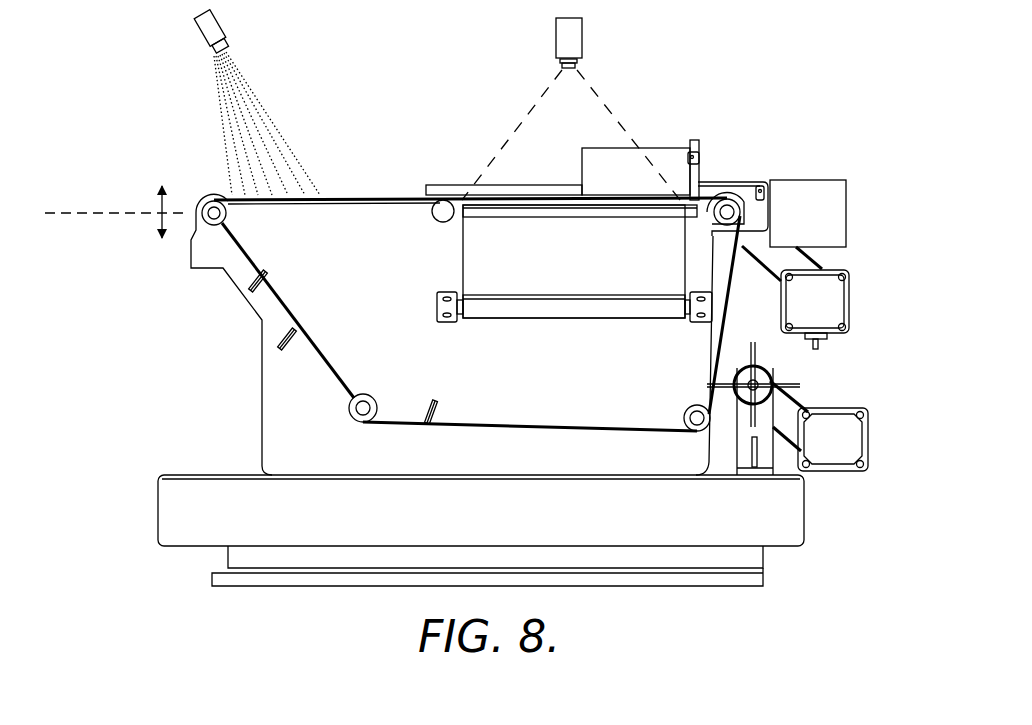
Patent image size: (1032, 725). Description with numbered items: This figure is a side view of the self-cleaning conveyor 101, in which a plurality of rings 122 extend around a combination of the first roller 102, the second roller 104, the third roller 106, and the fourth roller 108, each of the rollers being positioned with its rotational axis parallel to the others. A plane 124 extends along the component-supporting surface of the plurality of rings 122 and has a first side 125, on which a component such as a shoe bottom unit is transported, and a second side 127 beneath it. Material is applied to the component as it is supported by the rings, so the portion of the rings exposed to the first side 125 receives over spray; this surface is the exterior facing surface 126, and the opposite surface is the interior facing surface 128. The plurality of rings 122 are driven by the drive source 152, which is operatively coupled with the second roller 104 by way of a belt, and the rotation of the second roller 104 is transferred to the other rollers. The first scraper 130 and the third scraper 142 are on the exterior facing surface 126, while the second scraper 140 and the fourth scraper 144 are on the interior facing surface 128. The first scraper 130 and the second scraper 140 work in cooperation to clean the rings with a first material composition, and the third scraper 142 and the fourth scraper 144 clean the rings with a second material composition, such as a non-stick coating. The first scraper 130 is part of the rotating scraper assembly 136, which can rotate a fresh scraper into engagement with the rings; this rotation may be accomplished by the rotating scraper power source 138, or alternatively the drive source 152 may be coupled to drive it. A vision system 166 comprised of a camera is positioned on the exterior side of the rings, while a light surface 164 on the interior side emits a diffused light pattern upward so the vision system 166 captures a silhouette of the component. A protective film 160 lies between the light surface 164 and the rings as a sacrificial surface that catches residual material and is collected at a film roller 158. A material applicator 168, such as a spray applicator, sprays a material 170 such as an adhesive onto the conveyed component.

The self-cleaning conveyor 101 is at (102, 57).
The first roller 102 is at (222, 217).
The second roller 104 is at (752, 211).
The third roller 106 is at (688, 435).
The fourth roller 108 is at (353, 420).
The plurality of rings 122 is at (552, 434).
The plane 124 is at (60, 210).
The first side 125 is at (160, 199).
The exterior facing surface 126 is at (383, 194).
The second side 127 is at (160, 230).
The interior facing surface 128 is at (360, 207).
The first scraper 130 is at (709, 378).
The rotating scraper assembly 136 is at (773, 372).
The rotating scraper power source 138 is at (838, 457).
The second scraper 140 is at (442, 406).
The third scraper 142 is at (290, 353).
The fourth scraper 144 is at (258, 264).
The drive source 152 is at (830, 300).
The film roller 158 is at (650, 315).
The protective film 160 is at (578, 270).
The light surface 164 is at (652, 214).
The vision system 166 is at (588, 31).
The material applicator 168 is at (222, 13).
The material 170 is at (277, 105).